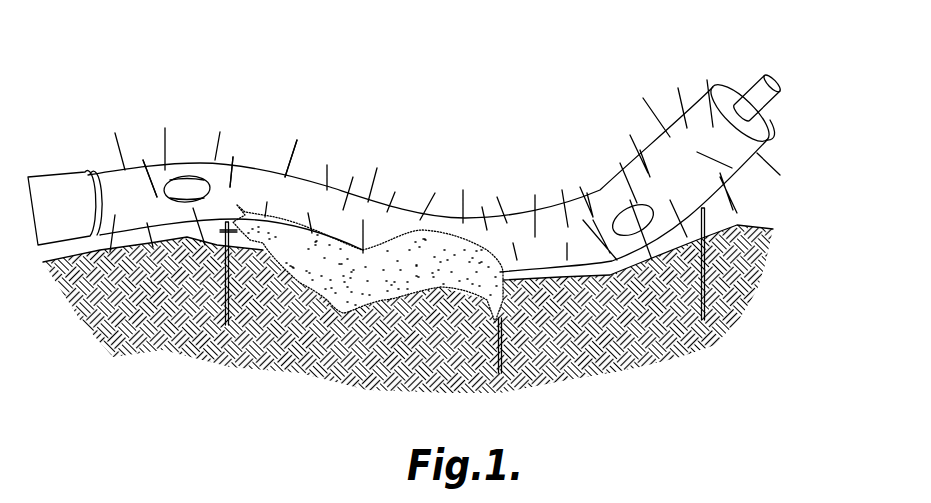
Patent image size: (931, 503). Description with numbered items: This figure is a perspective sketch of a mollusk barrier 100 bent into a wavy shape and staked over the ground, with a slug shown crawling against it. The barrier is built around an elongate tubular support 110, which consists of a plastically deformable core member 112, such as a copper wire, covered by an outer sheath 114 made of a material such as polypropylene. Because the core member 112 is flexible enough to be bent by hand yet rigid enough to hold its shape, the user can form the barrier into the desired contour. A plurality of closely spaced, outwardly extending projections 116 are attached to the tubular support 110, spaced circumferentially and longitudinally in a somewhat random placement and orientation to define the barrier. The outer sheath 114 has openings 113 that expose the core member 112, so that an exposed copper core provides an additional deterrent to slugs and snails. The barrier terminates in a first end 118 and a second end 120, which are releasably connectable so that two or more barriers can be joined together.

The mollusk barrier 100 is at (788, 212).
The elongate tubular support 110 is at (412, 213).
The plastically deformable core member 112 is at (193, 186).
The openings 113 is at (167, 172).
The outer sheath 114 is at (770, 127).
The projections 116 is at (257, 170).
The first end 118 is at (65, 177).
The second end 120 is at (733, 90).